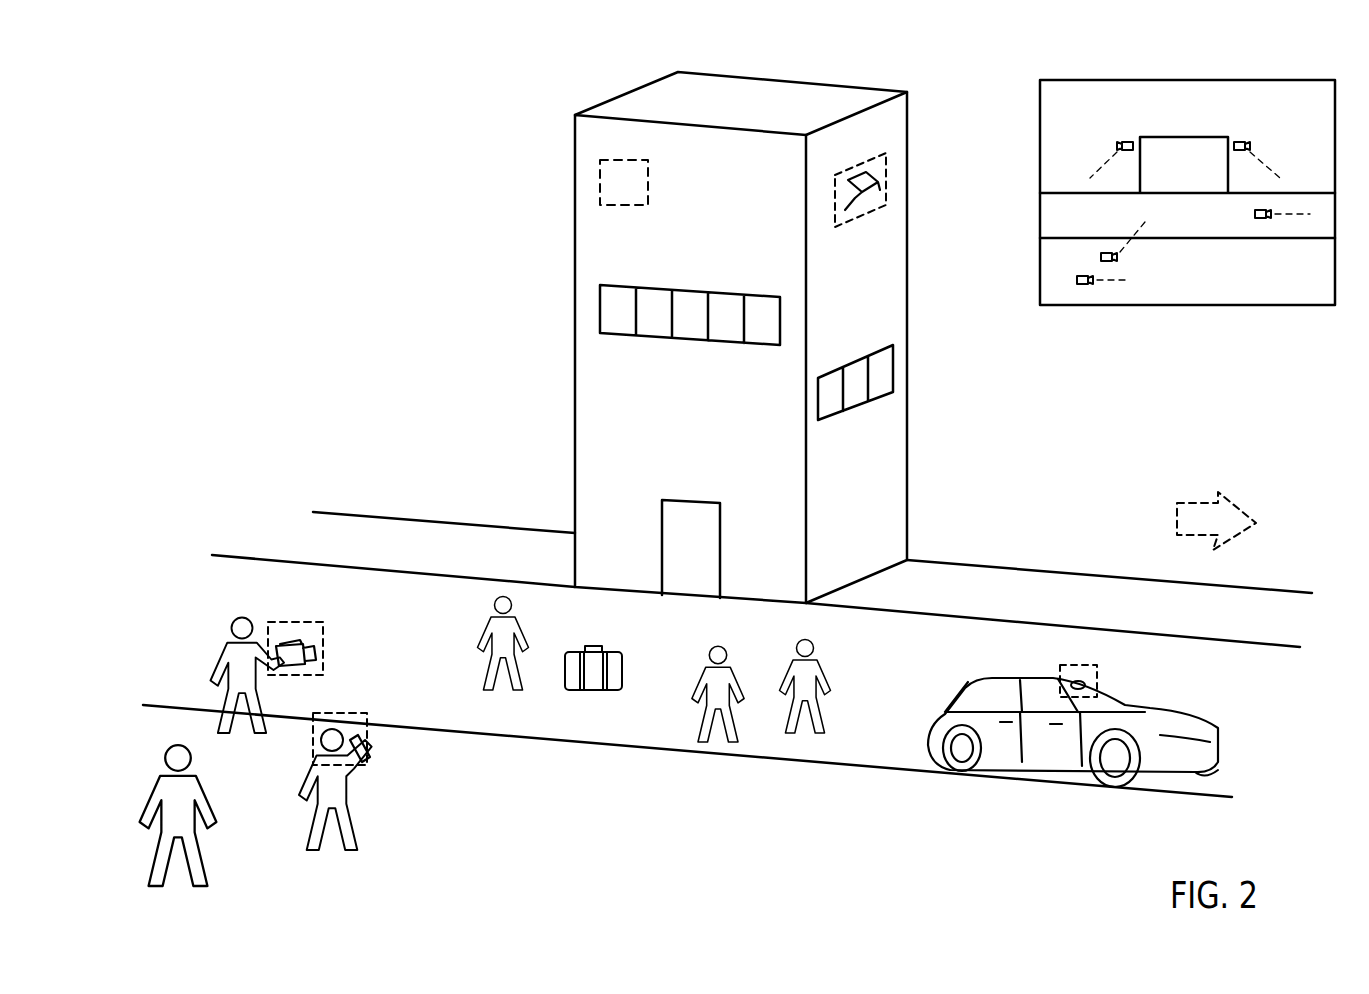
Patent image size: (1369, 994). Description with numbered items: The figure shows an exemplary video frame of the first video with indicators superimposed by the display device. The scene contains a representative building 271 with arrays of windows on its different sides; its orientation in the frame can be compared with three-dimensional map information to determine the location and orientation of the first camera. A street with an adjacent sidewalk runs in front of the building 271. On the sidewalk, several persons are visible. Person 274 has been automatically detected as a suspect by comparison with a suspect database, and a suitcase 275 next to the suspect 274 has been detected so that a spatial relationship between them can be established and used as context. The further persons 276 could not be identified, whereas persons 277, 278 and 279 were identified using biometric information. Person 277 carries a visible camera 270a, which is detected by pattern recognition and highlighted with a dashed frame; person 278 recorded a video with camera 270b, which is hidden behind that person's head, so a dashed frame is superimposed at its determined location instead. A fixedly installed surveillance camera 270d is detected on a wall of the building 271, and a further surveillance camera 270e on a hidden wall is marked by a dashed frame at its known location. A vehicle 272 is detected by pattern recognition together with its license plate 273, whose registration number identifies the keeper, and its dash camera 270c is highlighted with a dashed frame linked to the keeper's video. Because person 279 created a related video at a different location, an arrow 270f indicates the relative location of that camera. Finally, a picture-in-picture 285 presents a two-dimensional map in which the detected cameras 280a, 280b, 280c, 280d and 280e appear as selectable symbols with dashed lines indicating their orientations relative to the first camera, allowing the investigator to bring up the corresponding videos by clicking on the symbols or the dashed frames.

The building 271 is at (573, 132).
The surveillance camera 270e is at (650, 191).
The camera 270d is at (886, 153).
The picture-in-picture 285 is at (1308, 79).
The detected camera 280a is at (1098, 257).
The detected camera 280b is at (1083, 286).
The detected camera 280c is at (1262, 220).
The detected camera 280d is at (1240, 140).
The detected camera 280e is at (1127, 140).
The arrow 270f is at (1192, 500).
The suspect 274 is at (480, 625).
The suitcase 275 is at (625, 660).
The persons 276 is at (735, 722).
The person 277 is at (220, 642).
The camera 270a is at (325, 640).
The camera 270b is at (368, 740).
The person 278 is at (355, 812).
The person 279 is at (205, 848).
The vehicle 272 is at (1160, 710).
The license plate 273 is at (1215, 768).
The camera 270c is at (1078, 665).